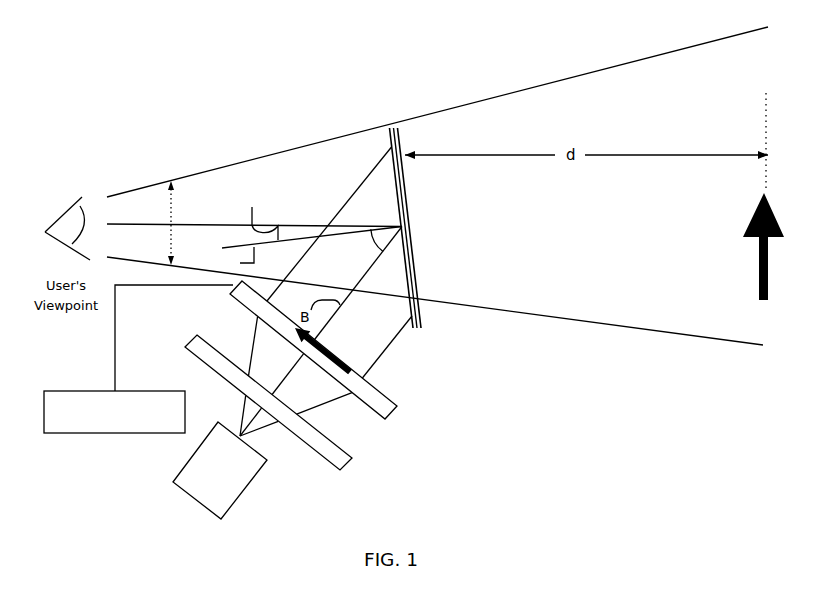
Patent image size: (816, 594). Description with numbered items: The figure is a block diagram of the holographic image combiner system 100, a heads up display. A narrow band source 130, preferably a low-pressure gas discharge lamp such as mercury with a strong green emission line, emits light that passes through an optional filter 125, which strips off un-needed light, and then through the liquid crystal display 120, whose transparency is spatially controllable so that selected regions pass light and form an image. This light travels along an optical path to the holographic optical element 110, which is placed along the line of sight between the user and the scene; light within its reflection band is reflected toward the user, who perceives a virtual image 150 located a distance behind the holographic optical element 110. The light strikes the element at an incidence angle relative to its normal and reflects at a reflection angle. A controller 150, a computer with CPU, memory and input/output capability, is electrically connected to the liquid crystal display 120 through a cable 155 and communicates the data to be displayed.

The holographic image combiner system 100 is at (166, 157).
The holographic optical element 110 is at (402, 170).
The liquid crystal display 120 is at (397, 403).
The filter 125 is at (352, 458).
The source 130 is at (243, 492).
The controller 150 is at (165, 421).
The cable 155 is at (113, 365).